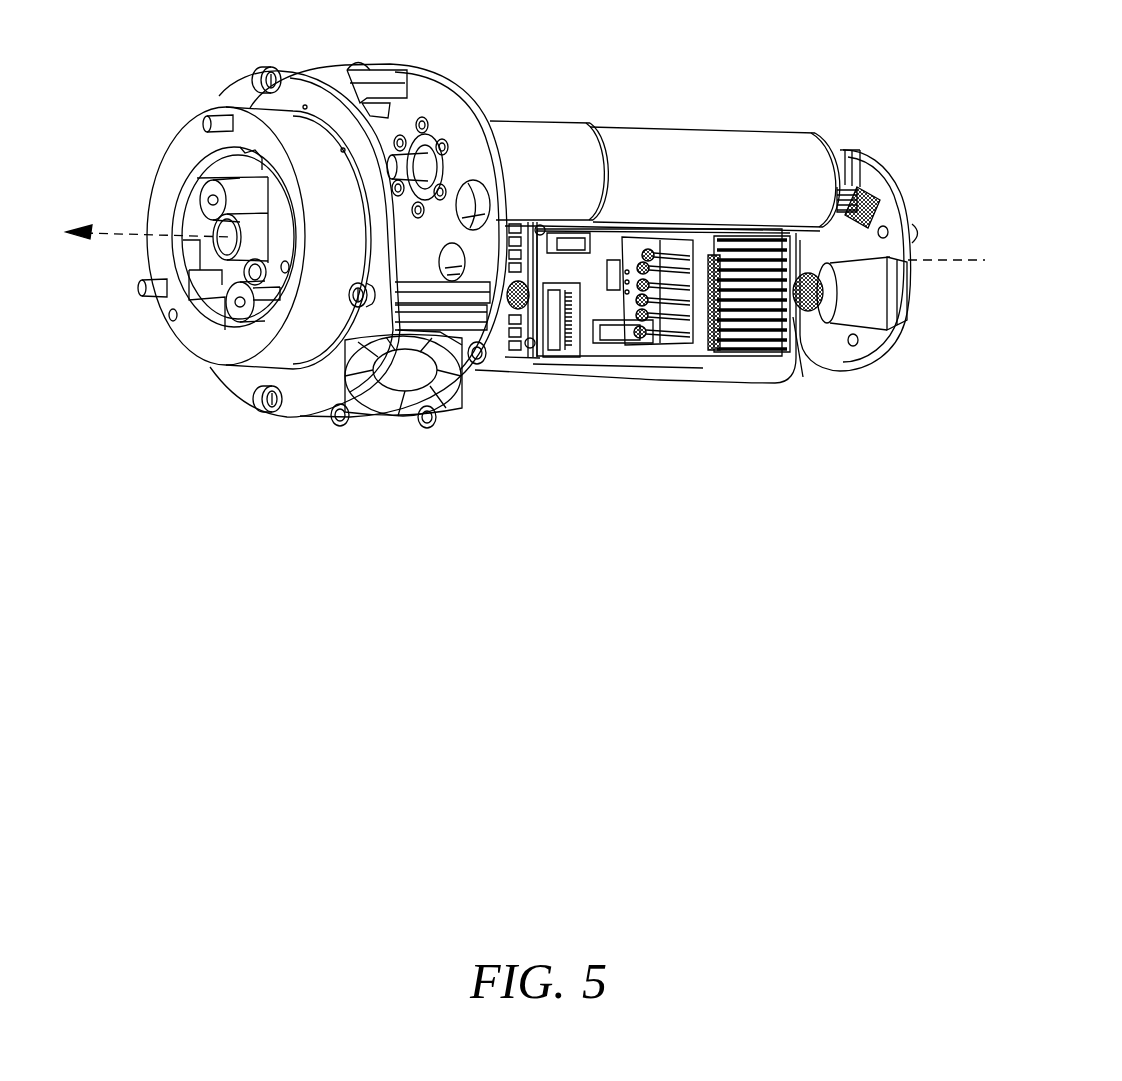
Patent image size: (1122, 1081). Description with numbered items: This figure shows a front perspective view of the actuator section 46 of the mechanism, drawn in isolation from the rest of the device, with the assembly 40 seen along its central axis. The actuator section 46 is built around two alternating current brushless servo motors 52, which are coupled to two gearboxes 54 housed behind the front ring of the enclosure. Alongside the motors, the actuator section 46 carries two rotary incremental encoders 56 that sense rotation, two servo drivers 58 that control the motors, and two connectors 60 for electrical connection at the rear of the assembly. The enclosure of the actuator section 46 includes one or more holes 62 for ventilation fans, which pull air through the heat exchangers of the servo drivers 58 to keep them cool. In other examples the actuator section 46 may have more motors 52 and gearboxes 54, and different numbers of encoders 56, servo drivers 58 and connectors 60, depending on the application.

The motor assembly 40 is at (961, 264).
The actuator section 46 is at (259, 433).
The alternating current brushless servo motor 52 is at (700, 373).
The gearbox 54 is at (518, 367).
The rotary incremental encoder 56 is at (803, 347).
The servo driver 58 is at (620, 338).
The connector 60 is at (863, 307).
The hole 62 is at (390, 378).